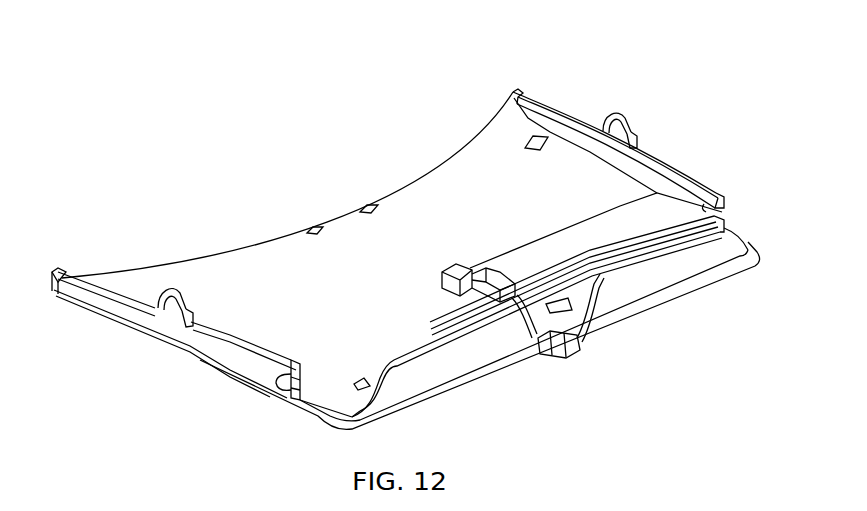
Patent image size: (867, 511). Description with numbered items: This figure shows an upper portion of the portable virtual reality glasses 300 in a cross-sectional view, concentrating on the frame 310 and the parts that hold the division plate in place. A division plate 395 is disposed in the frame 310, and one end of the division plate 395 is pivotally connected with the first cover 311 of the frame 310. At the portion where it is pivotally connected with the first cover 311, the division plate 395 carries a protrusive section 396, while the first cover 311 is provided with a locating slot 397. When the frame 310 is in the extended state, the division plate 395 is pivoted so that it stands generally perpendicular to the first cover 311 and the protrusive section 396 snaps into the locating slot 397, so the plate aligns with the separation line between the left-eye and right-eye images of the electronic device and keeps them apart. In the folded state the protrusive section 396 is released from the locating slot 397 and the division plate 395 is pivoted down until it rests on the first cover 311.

The portable virtual reality glasses 300 is at (118, 66).
The frame 310 is at (455, 125).
The first cover 311 is at (203, 258).
The division plate 395 is at (648, 222).
The protrusive section 396 is at (452, 278).
The locating slot 397 is at (488, 288).